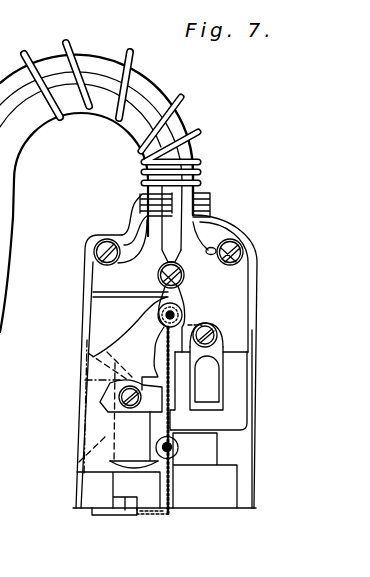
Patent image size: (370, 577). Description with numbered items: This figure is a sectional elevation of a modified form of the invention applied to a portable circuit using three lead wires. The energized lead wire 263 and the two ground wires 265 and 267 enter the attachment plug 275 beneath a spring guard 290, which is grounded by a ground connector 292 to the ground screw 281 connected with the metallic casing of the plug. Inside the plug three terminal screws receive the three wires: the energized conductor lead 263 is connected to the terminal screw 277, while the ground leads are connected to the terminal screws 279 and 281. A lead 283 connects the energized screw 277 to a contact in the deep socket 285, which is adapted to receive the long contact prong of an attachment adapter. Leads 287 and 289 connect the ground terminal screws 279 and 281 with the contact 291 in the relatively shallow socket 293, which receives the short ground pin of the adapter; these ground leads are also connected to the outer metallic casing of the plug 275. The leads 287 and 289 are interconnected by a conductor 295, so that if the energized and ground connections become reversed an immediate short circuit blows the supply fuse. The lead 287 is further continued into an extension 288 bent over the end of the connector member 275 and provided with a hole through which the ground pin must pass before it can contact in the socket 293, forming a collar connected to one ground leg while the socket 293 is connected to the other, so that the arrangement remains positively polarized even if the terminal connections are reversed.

The energized lead wire 263 is at (177, 123).
The ground wire 265 is at (143, 100).
The ground wire 267 is at (143, 123).
The attachment plug 275 is at (257, 336).
The terminal screw 277 is at (245, 249).
The terminal screw 279 is at (202, 260).
The terminal screw 281 is at (97, 237).
The lead 283 is at (183, 327).
The deep socket 285 is at (223, 374).
The lead 287 is at (170, 377).
The extension 288 is at (166, 516).
The lead 289 is at (85, 318).
The spring guard 290 is at (200, 165).
The contact 291 is at (104, 413).
The ground connector 292 is at (114, 232).
The shallow socket 293 is at (77, 472).
The conductor 295 is at (105, 291).